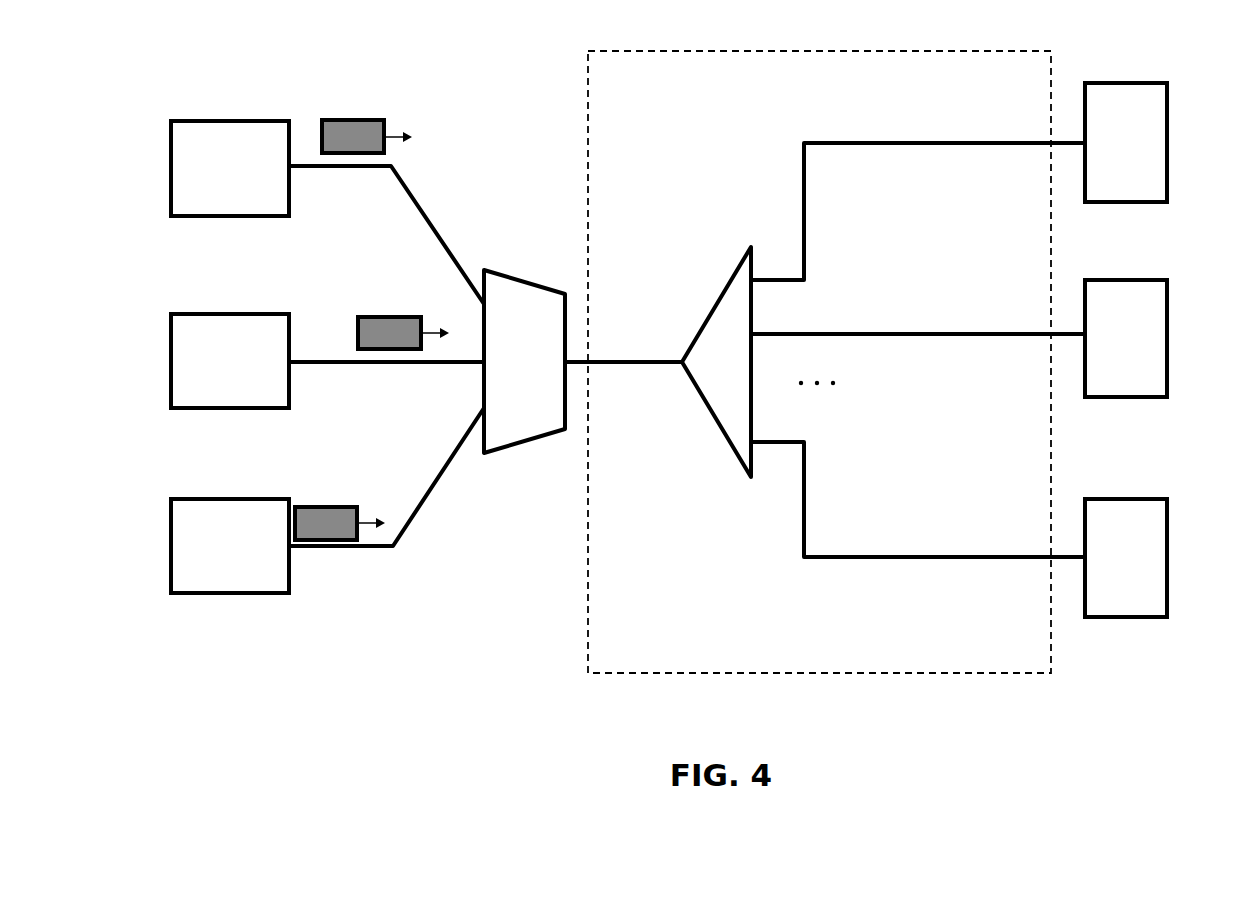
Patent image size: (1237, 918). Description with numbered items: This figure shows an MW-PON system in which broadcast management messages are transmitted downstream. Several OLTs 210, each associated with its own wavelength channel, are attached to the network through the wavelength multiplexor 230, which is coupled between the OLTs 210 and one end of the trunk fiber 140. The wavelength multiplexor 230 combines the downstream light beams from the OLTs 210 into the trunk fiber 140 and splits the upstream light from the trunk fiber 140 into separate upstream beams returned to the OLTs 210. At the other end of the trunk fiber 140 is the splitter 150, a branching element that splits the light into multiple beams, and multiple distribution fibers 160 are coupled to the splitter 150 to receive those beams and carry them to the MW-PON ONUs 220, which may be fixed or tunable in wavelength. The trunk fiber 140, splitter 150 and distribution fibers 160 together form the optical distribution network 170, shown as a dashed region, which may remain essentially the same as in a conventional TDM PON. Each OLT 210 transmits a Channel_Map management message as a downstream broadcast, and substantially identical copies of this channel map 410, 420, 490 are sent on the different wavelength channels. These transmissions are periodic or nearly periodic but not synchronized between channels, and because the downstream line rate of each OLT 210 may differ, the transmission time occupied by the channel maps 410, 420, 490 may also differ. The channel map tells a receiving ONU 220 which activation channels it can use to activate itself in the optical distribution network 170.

The trunk fiber 140 is at (610, 364).
The splitter 150 is at (728, 277).
The distribution fibers 160 is at (898, 145).
The optical distribution network 170 is at (925, 675).
The OLTs 210 is at (222, 120).
The MW-PON ONUs 220 is at (1120, 82).
The wavelength multiplexor 230 is at (531, 278).
The channel map 410 is at (366, 119).
The channel map 420 is at (428, 282).
The channel map 490 is at (335, 506).